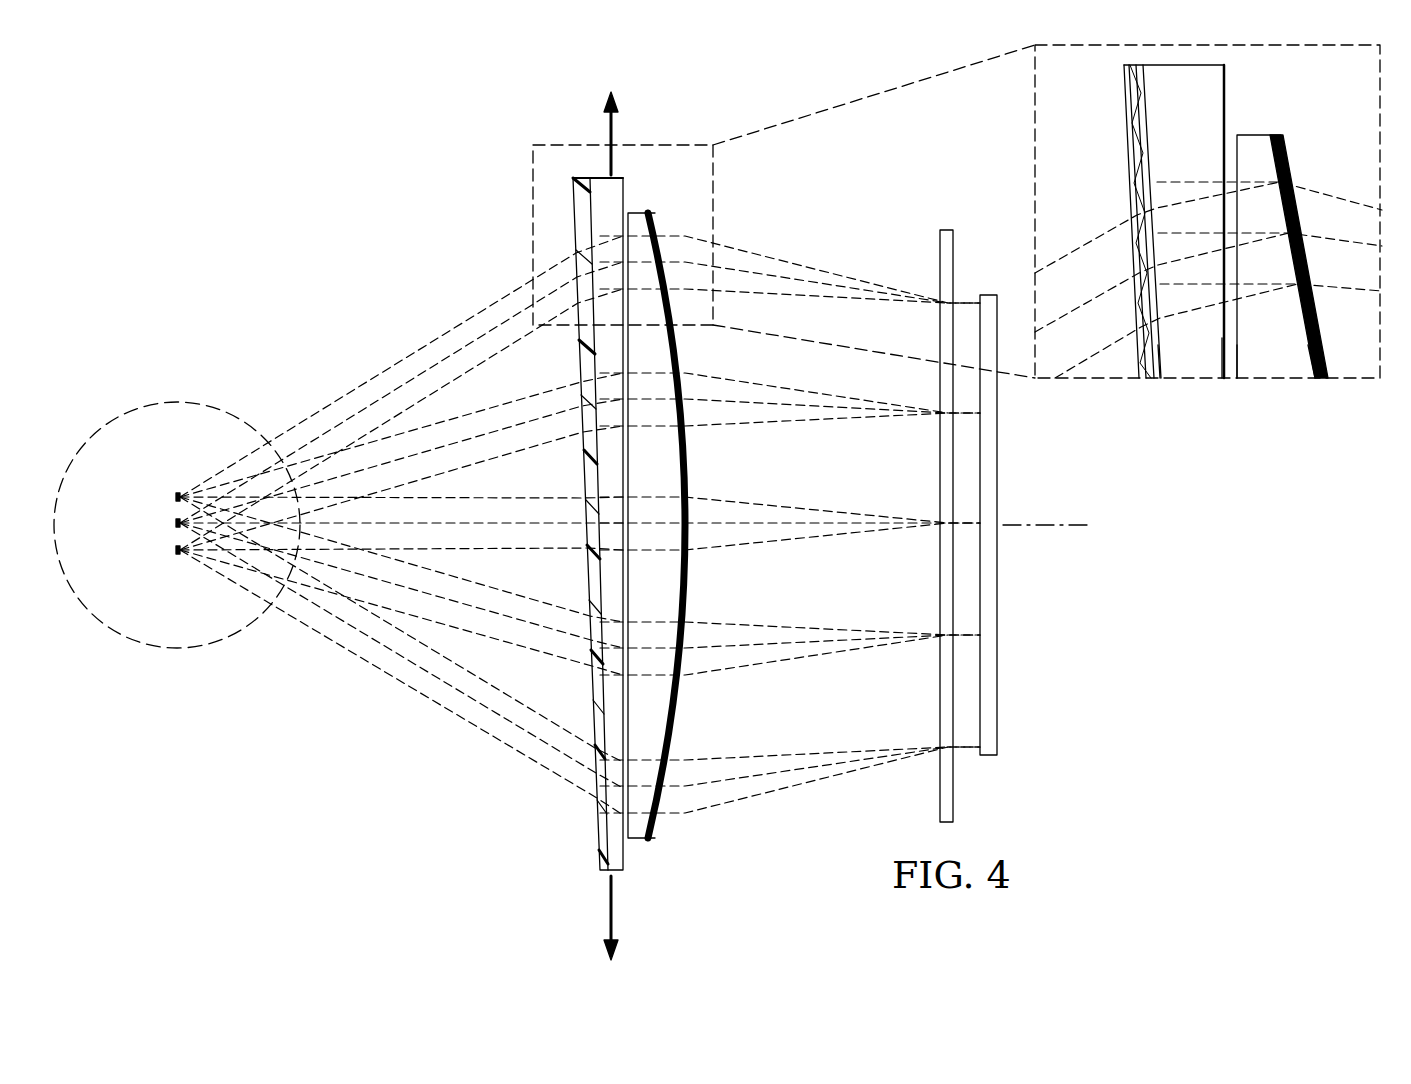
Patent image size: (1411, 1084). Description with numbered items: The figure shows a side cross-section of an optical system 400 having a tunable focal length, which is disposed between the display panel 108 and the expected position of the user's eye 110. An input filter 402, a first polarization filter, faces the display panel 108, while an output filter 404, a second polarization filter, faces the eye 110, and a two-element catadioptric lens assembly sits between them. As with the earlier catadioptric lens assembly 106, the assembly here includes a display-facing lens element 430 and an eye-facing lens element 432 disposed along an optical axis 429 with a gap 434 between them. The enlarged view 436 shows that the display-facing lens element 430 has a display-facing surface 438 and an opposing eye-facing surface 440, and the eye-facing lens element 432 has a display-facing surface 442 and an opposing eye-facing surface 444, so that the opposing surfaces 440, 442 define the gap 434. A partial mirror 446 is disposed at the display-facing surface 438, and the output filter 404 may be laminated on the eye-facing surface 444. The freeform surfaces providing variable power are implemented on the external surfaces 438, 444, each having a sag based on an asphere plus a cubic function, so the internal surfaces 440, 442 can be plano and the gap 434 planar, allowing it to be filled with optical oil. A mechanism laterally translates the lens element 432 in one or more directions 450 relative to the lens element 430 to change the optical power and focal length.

The optical system 400 is at (297, 143).
The user's eye 110 is at (170, 402).
The catadioptric lens assembly 106 is at (936, 477).
The output filter 404 is at (595, 840).
The eye-facing lens element 432 is at (617, 196).
The gap 434 is at (1228, 122).
The display-facing lens element 430 is at (638, 828).
The partial mirror 446 is at (690, 473).
The directions 450 is at (605, 130).
The input filter 402 is at (940, 250).
The display panel 108 is at (998, 472).
The optical axis 429 is at (1090, 528).
The enlarged view 436 is at (1033, 133).
The display-facing surface of the eye-facing lens element 442 is at (1216, 356).
The display-facing surface of the display-facing lens element 438 is at (1308, 356).
The eye-facing surface of the eye-facing lens element 444 is at (1166, 356).
The eye-facing surface of the display-facing lens element 440 is at (1243, 356).